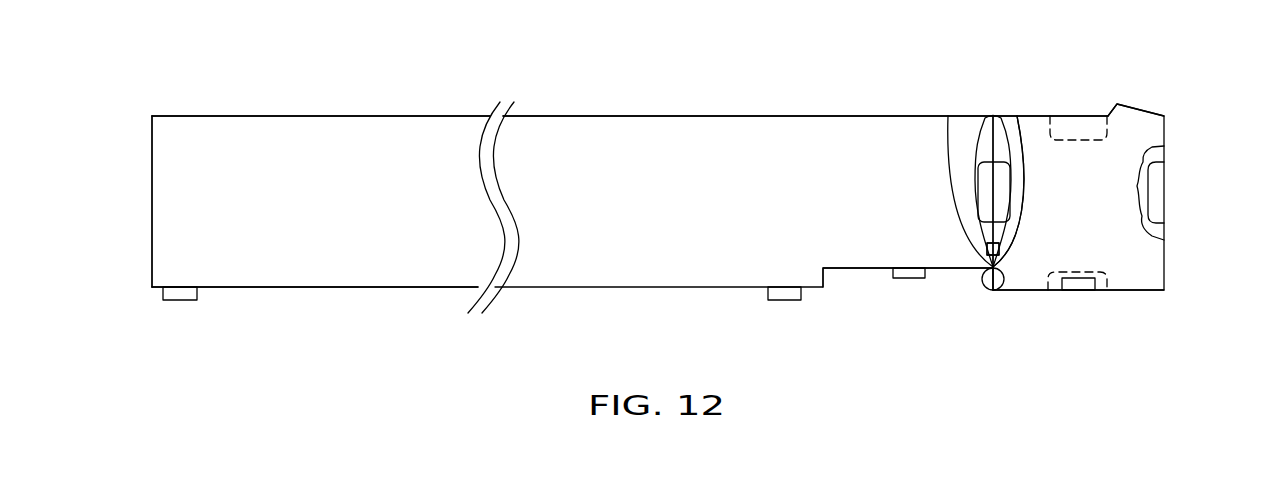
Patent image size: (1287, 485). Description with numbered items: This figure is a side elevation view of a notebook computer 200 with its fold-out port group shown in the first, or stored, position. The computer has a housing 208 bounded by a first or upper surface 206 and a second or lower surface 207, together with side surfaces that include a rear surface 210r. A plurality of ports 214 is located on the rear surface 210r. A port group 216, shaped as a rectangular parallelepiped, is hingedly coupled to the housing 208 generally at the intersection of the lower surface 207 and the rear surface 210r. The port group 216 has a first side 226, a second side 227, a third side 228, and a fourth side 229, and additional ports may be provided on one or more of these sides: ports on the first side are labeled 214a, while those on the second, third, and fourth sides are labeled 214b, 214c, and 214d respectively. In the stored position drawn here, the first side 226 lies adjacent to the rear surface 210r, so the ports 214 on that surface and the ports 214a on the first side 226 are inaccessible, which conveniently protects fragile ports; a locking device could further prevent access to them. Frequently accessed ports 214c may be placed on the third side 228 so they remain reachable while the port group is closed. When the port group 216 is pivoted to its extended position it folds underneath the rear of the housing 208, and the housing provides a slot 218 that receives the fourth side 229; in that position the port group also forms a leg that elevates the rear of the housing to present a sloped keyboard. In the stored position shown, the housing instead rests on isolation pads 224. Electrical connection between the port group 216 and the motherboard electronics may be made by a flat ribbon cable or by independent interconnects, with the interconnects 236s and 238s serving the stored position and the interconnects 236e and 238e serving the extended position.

The notebook computer 200 is at (1203, 97).
The upper surface 206 is at (203, 113).
The lower surface 207 is at (235, 287).
The housing 208 is at (345, 113).
The rear surface 210r is at (1001, 244).
The ports 214 is at (985, 198).
The ports on first side 214a is at (1002, 181).
The ports on second side 214b is at (1074, 112).
The ports on third side 214c is at (1165, 174).
The ports on fourth side 214d is at (1110, 271).
The port group 216 is at (1088, 110).
The slot 218 is at (832, 276).
The isolation pads 224 is at (180, 300).
The first side 226 is at (992, 143).
The second side 227 is at (1035, 116).
The third side 228 is at (1165, 205).
The fourth side 229 is at (1028, 290).
The independent interconnect for extended position 236e is at (1078, 291).
The independent interconnect for stored position 236s is at (1001, 251).
The independent interconnect for extended position 238e is at (909, 278).
The independent interconnect for stored position 238s is at (978, 250).